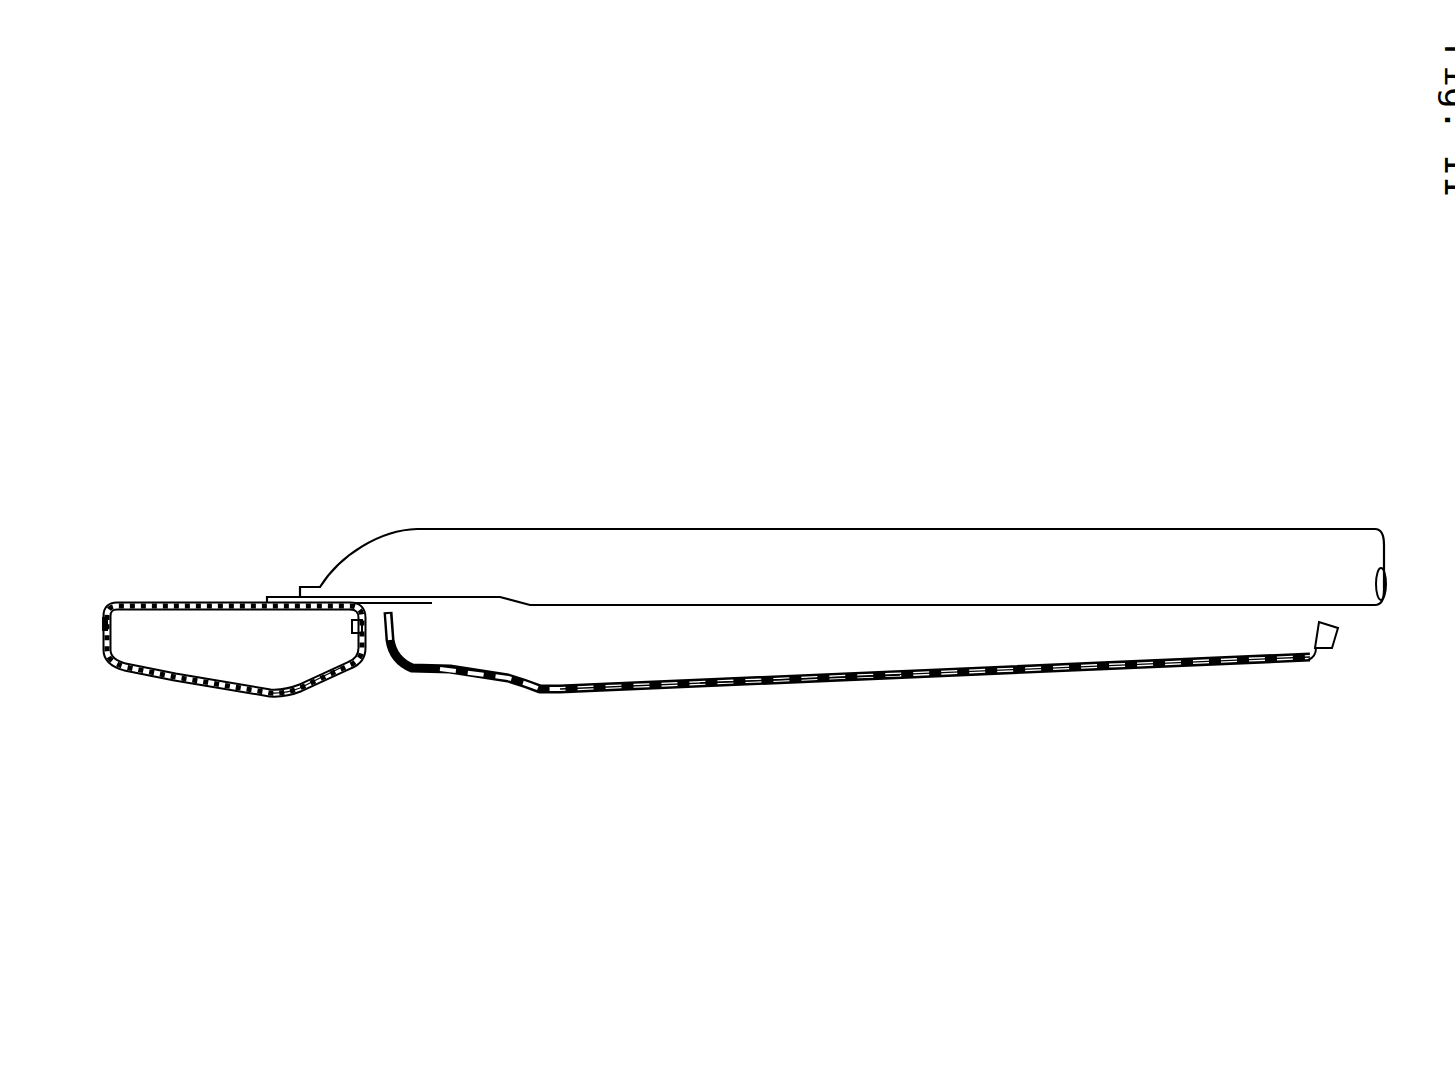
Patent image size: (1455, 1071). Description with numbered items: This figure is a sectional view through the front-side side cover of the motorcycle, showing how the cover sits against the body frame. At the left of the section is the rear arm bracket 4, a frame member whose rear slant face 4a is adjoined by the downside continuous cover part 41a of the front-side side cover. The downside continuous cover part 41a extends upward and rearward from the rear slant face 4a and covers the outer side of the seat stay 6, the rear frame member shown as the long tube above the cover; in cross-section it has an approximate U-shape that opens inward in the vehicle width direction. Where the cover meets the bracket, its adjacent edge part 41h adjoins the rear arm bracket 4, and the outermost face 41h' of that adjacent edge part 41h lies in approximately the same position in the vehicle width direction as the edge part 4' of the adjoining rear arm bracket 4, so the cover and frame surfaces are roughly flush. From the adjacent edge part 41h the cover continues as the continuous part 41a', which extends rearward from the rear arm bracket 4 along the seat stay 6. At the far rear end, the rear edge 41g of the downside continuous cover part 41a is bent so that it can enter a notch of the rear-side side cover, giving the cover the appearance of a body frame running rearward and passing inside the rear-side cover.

The rear arm bracket 4 is at (232, 710).
The edge part 4' is at (302, 741).
The rear slant face 4a is at (376, 660).
The adjacent edge part 41h is at (849, 704).
The outermost face 41h' is at (429, 722).
The downside continuous cover part 41a is at (935, 731).
The continuous part 41a' is at (800, 740).
The rear edge 41g is at (1317, 662).
The seat stay 6 is at (725, 529).